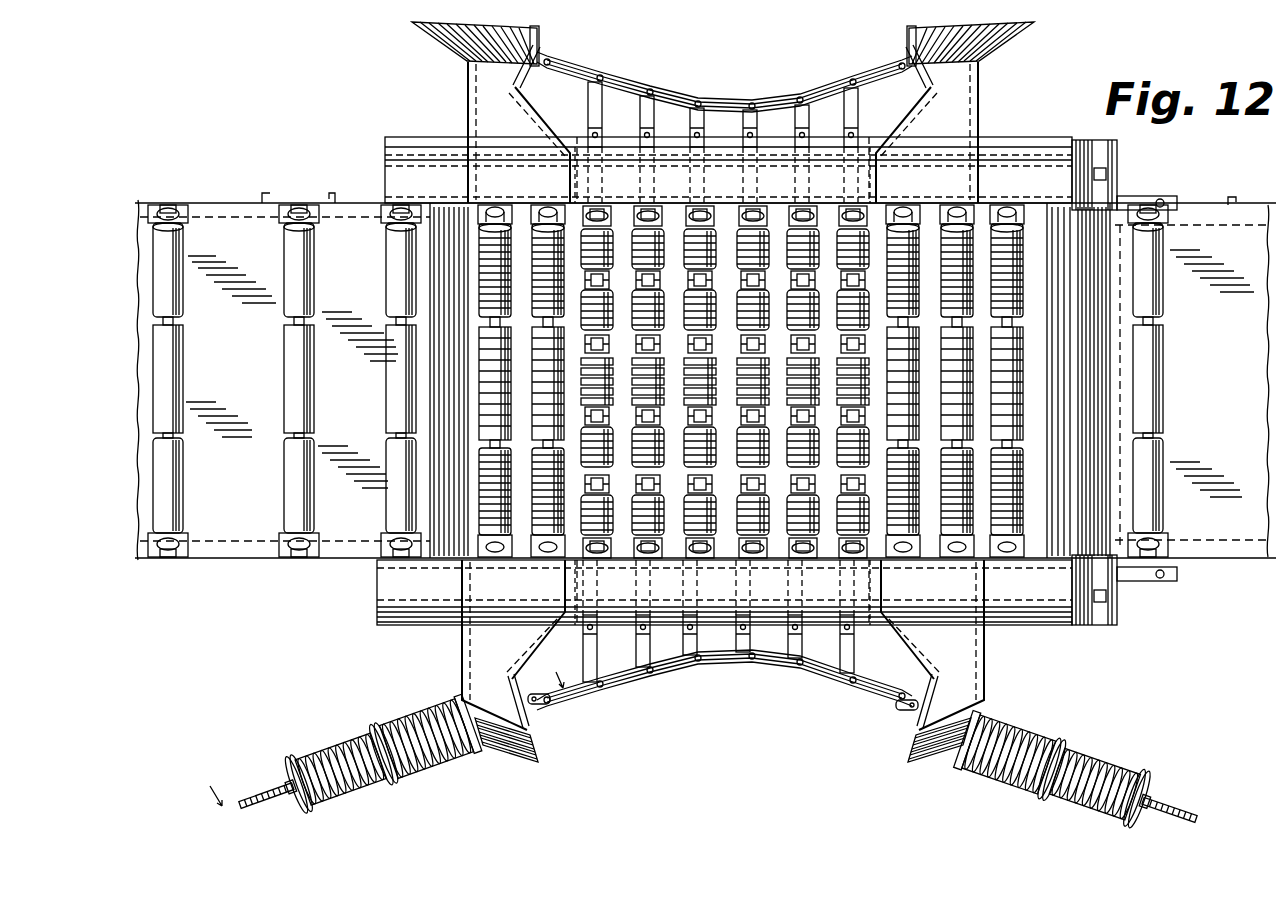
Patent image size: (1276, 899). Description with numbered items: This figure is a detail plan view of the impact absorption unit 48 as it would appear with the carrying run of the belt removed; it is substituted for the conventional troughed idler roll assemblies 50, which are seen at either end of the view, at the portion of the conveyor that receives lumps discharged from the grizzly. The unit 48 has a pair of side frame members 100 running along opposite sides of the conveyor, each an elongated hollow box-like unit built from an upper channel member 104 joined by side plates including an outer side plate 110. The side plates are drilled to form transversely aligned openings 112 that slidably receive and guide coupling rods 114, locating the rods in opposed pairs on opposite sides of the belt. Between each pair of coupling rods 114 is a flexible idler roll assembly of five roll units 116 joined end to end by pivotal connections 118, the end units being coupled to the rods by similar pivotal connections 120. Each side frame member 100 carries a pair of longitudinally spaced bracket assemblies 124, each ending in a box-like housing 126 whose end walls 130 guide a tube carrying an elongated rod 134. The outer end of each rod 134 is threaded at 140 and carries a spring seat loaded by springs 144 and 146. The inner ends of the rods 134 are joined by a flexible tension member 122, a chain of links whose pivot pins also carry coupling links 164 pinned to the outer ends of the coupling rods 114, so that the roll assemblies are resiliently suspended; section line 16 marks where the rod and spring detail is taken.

The section line 16— 16 is at (382, 732).
The impact absorption unit 48 is at (797, 705).
The troughed idler roll assemblies 50 is at (277, 351).
The side frame members 100 is at (1028, 162).
The upper channel member 104 is at (1026, 197).
The outer side plate 110 is at (996, 146).
The openings 112 is at (849, 148).
The coupling rods 114 is at (740, 178).
The roll units 116 is at (720, 372).
The pivotal connections 118 is at (757, 347).
The pivotal connections 120 is at (585, 560).
The flexible tension member 122 is at (703, 87).
The bracket assemblies 124 is at (484, 101).
The box-like housing 126 is at (539, 44).
The end walls 130 is at (527, 733).
The elongated rod 134 is at (555, 703).
The threaded section 140 is at (250, 795).
The spring 144 is at (418, 735).
The spring 146 is at (328, 755).
The coupling links 164 is at (600, 114).